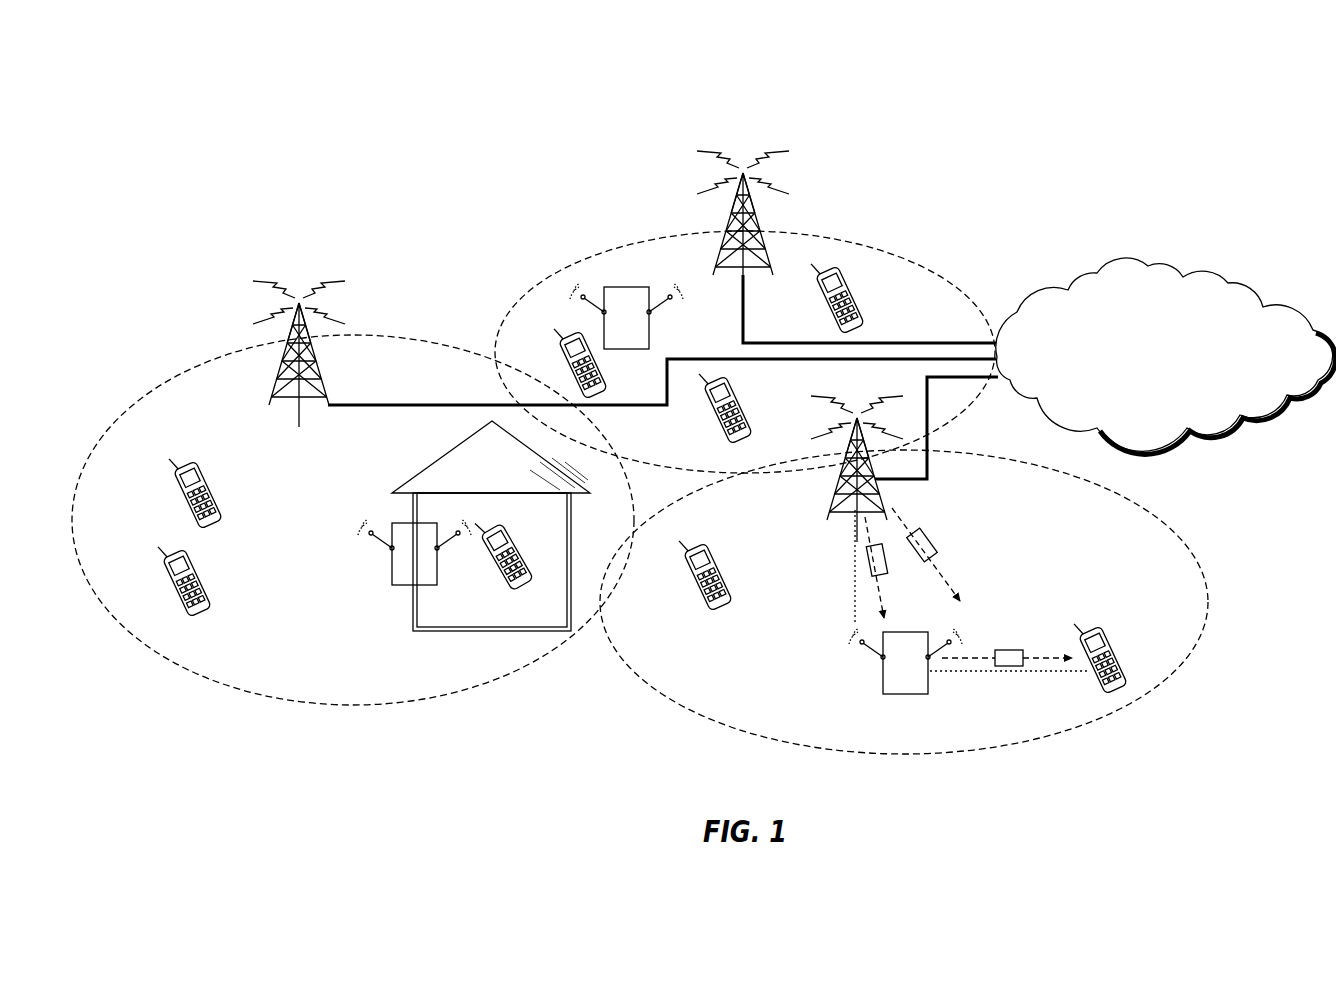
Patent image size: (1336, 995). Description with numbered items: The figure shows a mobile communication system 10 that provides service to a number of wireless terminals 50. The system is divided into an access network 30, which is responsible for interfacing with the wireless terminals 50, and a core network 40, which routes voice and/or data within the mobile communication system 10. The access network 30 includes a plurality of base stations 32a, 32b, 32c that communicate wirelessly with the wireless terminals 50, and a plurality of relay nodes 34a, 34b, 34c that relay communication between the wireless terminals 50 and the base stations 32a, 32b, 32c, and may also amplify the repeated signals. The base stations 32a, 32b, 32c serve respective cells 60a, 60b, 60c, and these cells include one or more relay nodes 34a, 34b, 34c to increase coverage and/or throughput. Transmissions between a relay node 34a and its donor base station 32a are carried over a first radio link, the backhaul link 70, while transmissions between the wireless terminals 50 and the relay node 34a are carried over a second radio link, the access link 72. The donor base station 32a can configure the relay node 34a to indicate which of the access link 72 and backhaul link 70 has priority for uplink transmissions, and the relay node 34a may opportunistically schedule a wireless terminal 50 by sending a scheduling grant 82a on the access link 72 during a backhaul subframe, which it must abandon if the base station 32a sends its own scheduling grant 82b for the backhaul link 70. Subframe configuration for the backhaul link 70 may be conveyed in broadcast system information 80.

The mobile communication system 10 is at (237, 104).
The access network 30 is at (499, 279).
The donor base station 32a is at (838, 490).
The base station 32b is at (760, 225).
The base station 32c is at (323, 377).
The relay node 34a is at (888, 695).
The relay node 34b is at (608, 287).
The relay node 34c is at (400, 523).
The core network 40 is at (1148, 265).
The wireless terminal 50 is at (212, 486).
The cell 60a is at (978, 462).
The cell 60b is at (708, 235).
The cell 60c is at (178, 378).
The backhaul link 70 is at (846, 584).
The access link 72 is at (988, 687).
The system information 80 is at (932, 540).
The scheduling grant 82a is at (1010, 650).
The scheduling grant 82b is at (886, 556).